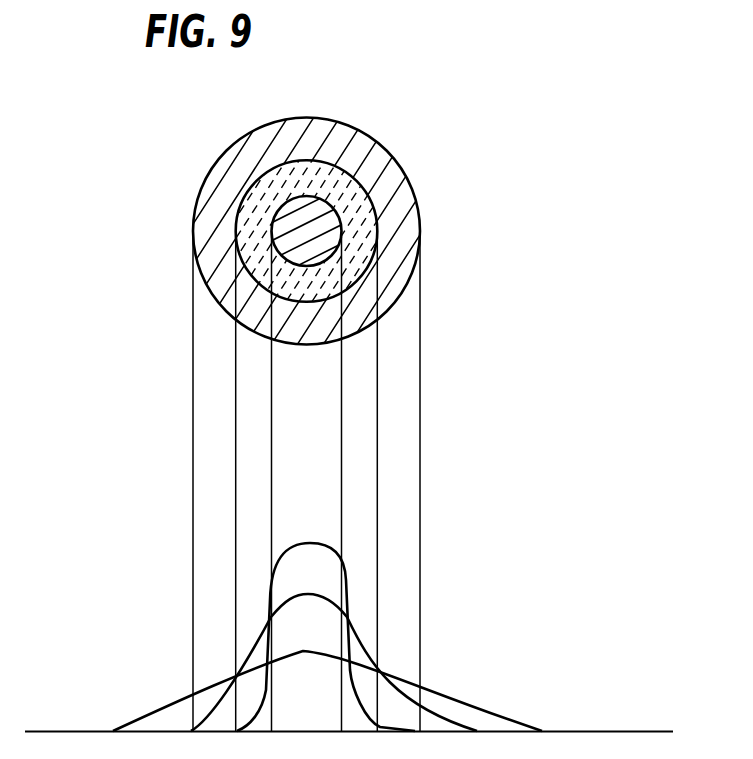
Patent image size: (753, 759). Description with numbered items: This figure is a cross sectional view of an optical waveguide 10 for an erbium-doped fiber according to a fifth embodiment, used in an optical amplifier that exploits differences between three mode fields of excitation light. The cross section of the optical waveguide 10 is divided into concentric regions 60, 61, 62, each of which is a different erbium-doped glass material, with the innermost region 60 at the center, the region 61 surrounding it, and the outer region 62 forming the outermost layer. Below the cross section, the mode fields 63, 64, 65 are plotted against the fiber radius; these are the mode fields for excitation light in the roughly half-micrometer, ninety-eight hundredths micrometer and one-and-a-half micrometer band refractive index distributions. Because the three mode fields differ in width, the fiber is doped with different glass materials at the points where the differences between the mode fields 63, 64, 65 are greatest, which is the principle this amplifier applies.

The optical waveguide 10 is at (161, 182).
The region 60 is at (303, 222).
The region 61 is at (340, 185).
The region 62 is at (400, 192).
The mode field 63 is at (312, 545).
The mode field 64 is at (320, 594).
The mode field 65 is at (317, 651).